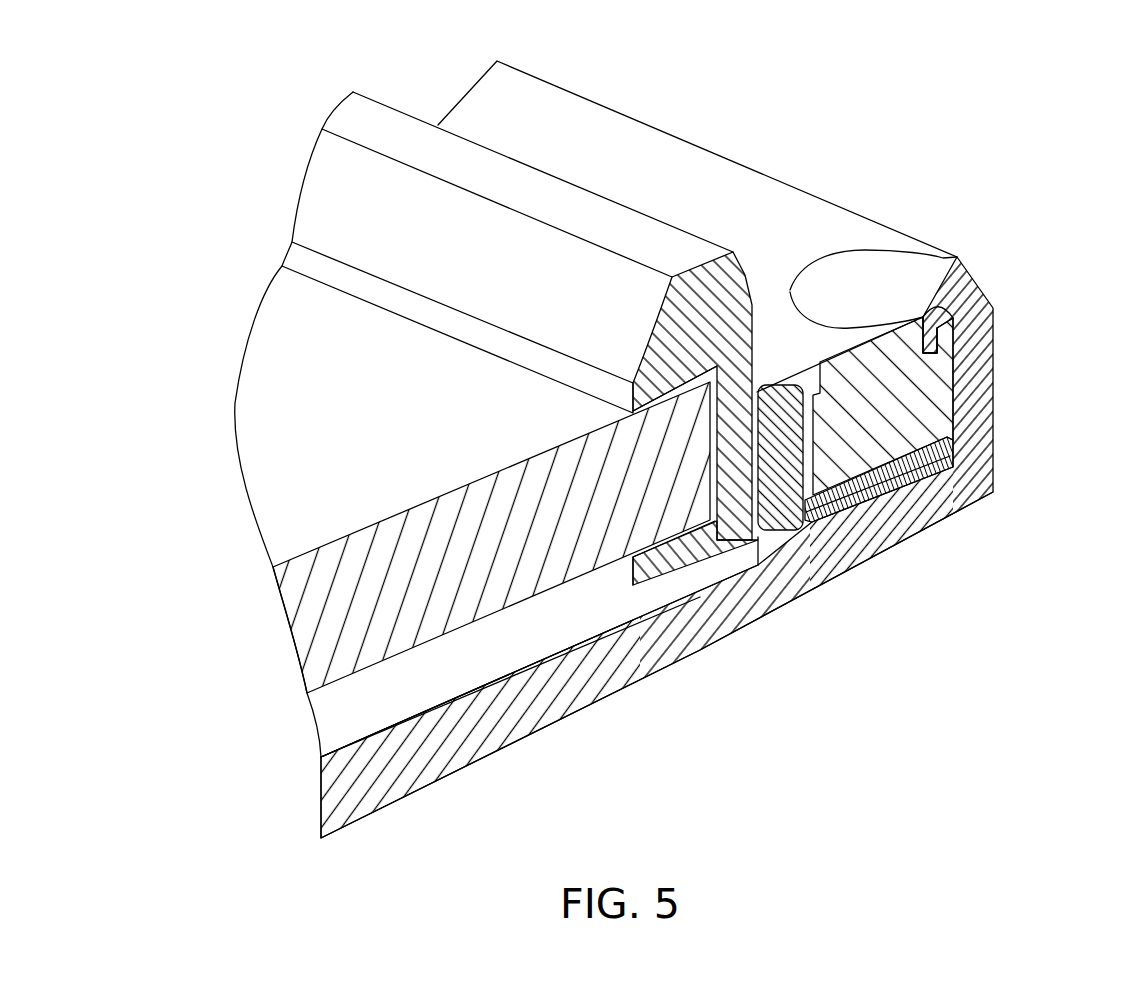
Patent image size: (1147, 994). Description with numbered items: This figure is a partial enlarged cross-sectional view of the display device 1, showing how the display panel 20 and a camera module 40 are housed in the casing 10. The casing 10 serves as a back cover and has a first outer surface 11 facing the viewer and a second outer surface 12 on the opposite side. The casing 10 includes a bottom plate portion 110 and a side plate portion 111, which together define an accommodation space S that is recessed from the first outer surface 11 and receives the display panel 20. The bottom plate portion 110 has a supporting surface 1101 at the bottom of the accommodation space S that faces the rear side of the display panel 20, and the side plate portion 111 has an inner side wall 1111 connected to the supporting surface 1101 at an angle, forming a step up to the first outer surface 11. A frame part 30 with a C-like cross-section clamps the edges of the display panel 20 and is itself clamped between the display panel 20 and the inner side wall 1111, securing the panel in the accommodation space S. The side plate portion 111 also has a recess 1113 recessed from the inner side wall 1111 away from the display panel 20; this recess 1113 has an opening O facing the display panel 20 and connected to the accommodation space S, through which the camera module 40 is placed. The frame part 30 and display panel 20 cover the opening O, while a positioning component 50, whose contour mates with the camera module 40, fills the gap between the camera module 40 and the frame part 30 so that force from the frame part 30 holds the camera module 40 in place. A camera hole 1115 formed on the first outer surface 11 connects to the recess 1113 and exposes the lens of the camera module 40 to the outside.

The display device 1 is at (686, 446).
The casing 10 is at (660, 446).
The first outer surface 11 is at (619, 223).
The side plate portion 111 is at (655, 125).
The inner side wall 1111 is at (750, 350).
The recess 1113 is at (925, 318).
The camera hole 1115 is at (858, 288).
The second outer surface 12 is at (468, 770).
The bottom plate portion 110 is at (539, 687).
The supporting surface 1101 is at (527, 642).
The display panel 20 is at (315, 470).
The frame part 30 is at (688, 553).
The camera module 40 is at (878, 492).
The positioning component 50 is at (775, 505).
The opening O is at (765, 388).
The accommodation space S is at (363, 697).